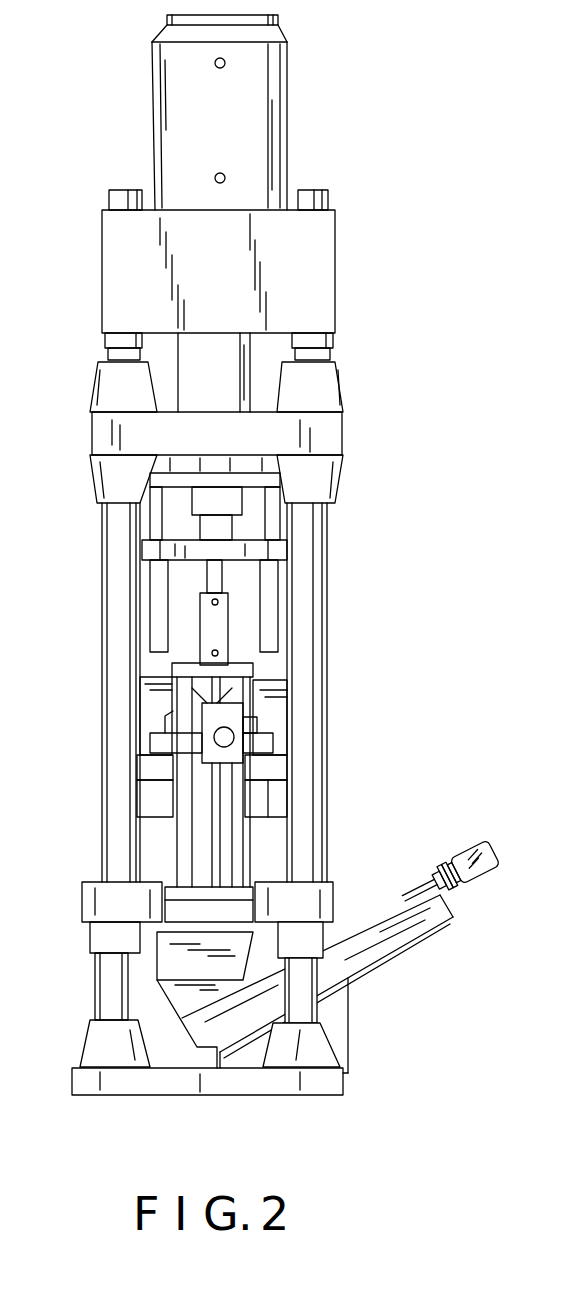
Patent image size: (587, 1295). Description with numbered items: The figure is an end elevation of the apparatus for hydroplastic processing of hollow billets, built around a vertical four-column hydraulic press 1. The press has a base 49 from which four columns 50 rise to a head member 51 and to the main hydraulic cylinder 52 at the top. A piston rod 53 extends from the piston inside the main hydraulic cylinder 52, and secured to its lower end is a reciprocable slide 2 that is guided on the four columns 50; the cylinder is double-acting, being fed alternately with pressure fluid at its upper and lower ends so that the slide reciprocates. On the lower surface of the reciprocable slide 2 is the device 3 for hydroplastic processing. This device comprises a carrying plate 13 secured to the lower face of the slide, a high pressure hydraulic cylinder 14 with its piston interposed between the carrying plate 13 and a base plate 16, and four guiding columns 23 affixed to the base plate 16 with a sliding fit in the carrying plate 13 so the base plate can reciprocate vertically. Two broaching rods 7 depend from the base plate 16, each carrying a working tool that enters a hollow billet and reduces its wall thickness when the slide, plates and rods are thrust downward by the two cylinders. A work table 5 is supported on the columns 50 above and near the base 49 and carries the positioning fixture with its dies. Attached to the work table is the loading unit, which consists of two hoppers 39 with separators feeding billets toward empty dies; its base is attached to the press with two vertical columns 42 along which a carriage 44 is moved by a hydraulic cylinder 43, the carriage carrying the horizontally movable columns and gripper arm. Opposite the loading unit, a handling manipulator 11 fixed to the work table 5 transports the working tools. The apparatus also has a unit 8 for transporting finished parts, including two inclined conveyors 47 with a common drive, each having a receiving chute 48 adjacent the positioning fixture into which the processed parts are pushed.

The vertical four-column hydraulic press 1 is at (115, 290).
The reciprocable slide 2 is at (105, 429).
The device for hydroplastic processing of hollow billets 3 is at (185, 580).
The work table 5 is at (95, 905).
The broaching rods 7 is at (153, 588).
The unit for the transportation of finished parts 8 is at (488, 870).
The handling manipulator 11 is at (157, 742).
The carrying plate 13 is at (232, 483).
The high pressure hydraulic cylinder 14 is at (228, 502).
The base plate 16 is at (167, 550).
The guiding columns 23 is at (153, 520).
The hoppers 39 is at (147, 673).
The vertical columns 42 is at (208, 837).
The hydraulic cylinder 43 is at (218, 633).
The carriage 44 is at (273, 733).
The inclined conveyors 47 is at (385, 912).
The receiving chute 48 is at (172, 963).
The base 49 is at (78, 1078).
The columns 50 is at (117, 708).
The head member 51 is at (233, 740).
The main hydraulic cylinder 52 is at (260, 108).
The piston rod 53 is at (220, 347).